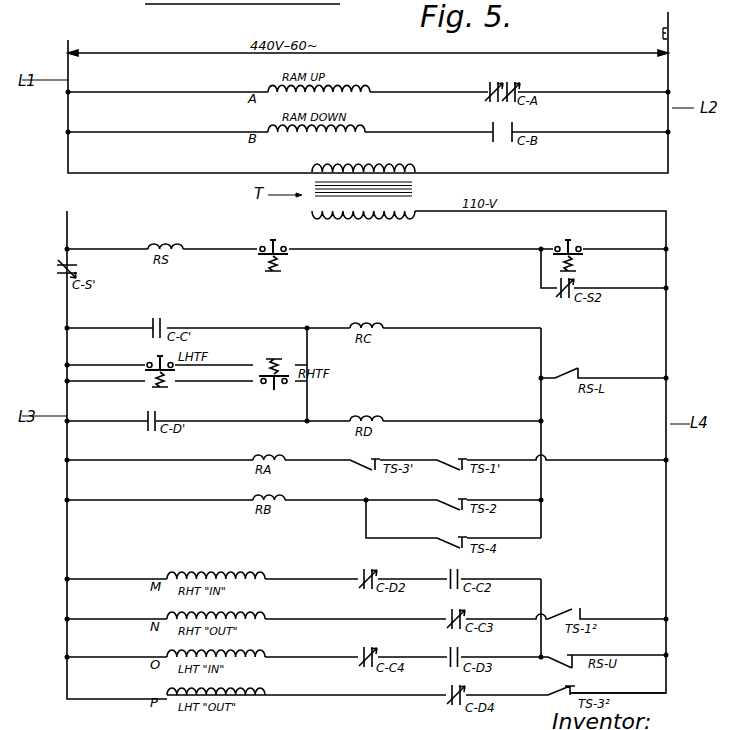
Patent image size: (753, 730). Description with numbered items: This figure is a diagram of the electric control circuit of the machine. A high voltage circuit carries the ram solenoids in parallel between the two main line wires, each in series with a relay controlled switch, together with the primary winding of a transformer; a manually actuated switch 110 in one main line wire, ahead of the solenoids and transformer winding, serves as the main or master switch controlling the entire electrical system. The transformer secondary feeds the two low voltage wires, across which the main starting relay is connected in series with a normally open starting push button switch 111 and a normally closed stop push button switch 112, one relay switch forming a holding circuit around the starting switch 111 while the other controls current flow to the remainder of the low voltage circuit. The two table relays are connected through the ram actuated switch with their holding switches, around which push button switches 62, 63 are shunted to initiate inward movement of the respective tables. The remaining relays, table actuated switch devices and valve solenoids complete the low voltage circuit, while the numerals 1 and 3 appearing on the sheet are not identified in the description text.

The control box 1 is at (168, 3).
The machine frame 3 is at (12, 10).
The push button switch 62 is at (158, 356).
The push button switch 63 is at (275, 388).
The manually actuated switch 110 is at (668, 33).
The push button switch 111 is at (575, 240).
The push button switch 112 is at (283, 258).